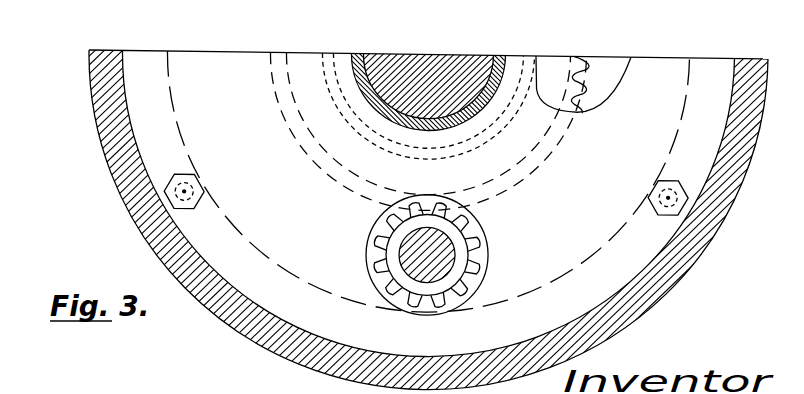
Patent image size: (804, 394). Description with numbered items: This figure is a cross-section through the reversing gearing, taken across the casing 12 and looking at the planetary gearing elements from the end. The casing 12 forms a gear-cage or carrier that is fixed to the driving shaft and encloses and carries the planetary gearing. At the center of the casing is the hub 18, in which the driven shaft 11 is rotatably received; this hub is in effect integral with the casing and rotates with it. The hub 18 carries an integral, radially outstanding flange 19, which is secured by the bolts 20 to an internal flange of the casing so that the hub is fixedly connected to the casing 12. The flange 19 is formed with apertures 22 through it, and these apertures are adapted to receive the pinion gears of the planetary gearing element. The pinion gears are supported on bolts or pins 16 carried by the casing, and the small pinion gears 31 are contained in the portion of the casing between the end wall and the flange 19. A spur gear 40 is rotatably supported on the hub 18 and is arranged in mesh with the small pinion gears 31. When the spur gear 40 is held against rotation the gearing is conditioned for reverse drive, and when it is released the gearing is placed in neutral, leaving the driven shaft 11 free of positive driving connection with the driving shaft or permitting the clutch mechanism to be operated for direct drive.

The driven shaft 11 is at (463, 60).
The casing 12 is at (725, 218).
The bolts or pins 16 is at (437, 260).
The hub 18 is at (505, 122).
The flange 19 is at (620, 265).
The bolts 20 is at (170, 190).
The apertures 22 is at (366, 258).
The small pinion gears 31 is at (465, 235).
The spur gear 40 is at (575, 89).